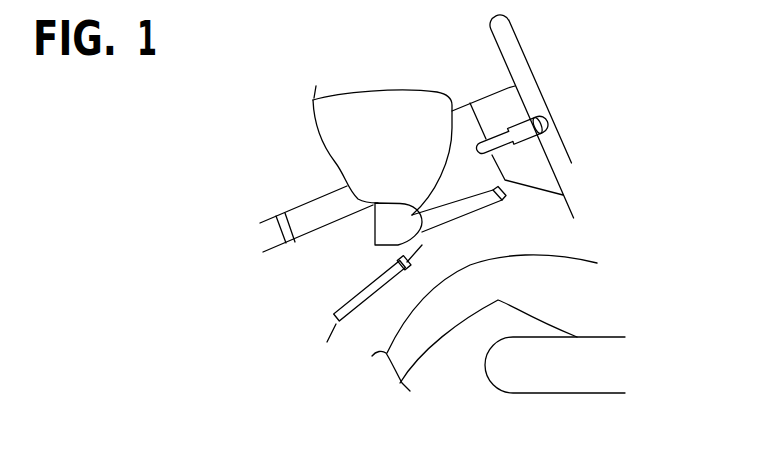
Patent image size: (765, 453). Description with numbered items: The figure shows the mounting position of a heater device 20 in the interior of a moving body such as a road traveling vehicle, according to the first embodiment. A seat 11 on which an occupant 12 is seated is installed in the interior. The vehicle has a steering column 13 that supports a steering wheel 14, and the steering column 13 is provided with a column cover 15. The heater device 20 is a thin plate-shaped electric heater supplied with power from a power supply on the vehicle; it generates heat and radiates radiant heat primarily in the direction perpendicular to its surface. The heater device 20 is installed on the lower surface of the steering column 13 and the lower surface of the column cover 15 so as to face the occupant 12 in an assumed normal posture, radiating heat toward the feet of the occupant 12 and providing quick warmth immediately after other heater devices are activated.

The seat 11 is at (590, 394).
The occupant 12 is at (444, 360).
The steering column 13 is at (519, 40).
The steering wheel 14 is at (460, 108).
The column cover 15 is at (423, 243).
The heater device 20 is at (487, 204).